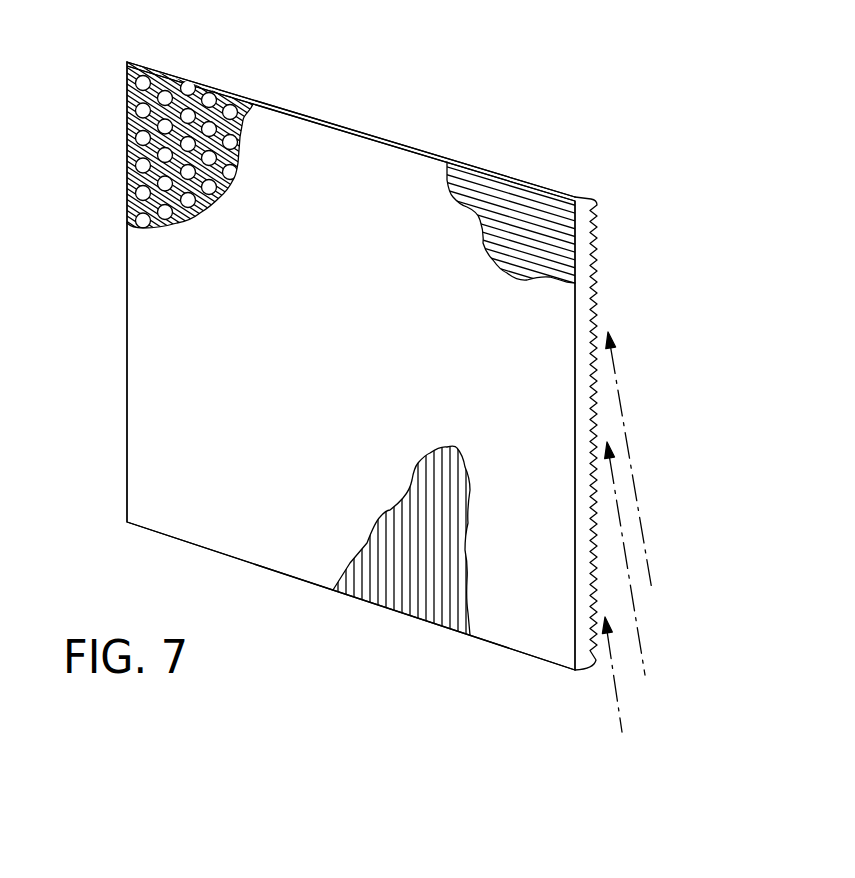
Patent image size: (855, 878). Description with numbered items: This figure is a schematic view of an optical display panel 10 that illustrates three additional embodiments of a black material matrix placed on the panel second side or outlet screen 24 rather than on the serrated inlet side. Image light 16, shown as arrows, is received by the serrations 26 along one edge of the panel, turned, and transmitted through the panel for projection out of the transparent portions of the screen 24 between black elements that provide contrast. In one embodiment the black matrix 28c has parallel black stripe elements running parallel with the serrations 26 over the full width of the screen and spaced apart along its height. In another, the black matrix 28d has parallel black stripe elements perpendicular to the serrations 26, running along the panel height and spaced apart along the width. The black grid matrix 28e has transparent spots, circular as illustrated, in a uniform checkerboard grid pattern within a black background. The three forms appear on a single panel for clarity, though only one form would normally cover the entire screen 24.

The optical display panel 10 is at (616, 209).
The image light 16 is at (647, 558).
The outlet screen 24 is at (296, 403).
The serrations 26 is at (602, 293).
The black matrix 28c is at (500, 192).
The black matrix 28d is at (412, 573).
The black grid matrix 28e is at (163, 80).